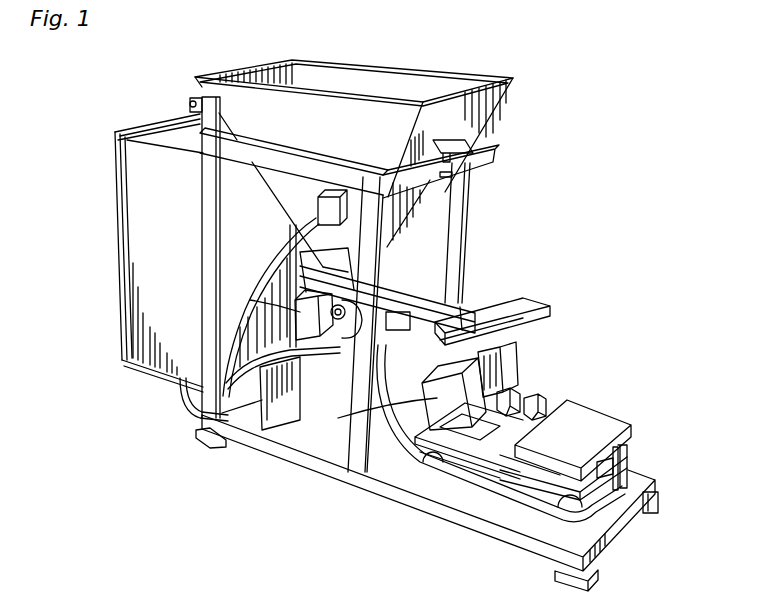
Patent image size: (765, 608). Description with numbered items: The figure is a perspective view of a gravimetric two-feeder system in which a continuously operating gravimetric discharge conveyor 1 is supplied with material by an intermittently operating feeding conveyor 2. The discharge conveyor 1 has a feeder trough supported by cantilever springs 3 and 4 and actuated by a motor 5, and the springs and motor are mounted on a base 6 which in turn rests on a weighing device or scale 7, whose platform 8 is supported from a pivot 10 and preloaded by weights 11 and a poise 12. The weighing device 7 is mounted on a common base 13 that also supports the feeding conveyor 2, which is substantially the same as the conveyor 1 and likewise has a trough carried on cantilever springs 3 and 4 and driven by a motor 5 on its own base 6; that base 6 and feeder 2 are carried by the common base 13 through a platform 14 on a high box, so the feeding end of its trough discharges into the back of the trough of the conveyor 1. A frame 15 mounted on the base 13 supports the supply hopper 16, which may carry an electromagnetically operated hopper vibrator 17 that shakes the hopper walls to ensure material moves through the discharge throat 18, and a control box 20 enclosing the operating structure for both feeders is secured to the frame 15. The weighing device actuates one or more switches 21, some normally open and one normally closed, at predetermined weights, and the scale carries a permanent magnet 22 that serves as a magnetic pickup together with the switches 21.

The gravimetric discharge conveyor 1 is at (527, 308).
The feeding conveyor 2 is at (417, 298).
The cantilever spring 3 is at (328, 328).
The cantilever spring 4 is at (393, 334).
The motor 5 is at (300, 312).
The base 6 is at (327, 343).
The weighing device or scale 7 is at (618, 413).
The platform 8 is at (470, 432).
The pivot 10 is at (500, 457).
The weights 11 is at (587, 418).
The poise 12 is at (545, 406).
The common base 13 is at (552, 527).
The platform 14 is at (440, 480).
The frame 15 is at (466, 215).
The supply hopper 16 is at (408, 78).
The hopper vibrator 17 is at (318, 213).
The discharge throat 18 is at (336, 277).
The control box 20 is at (138, 221).
The switches 21 is at (629, 452).
The permanent magnet 22 is at (608, 461).